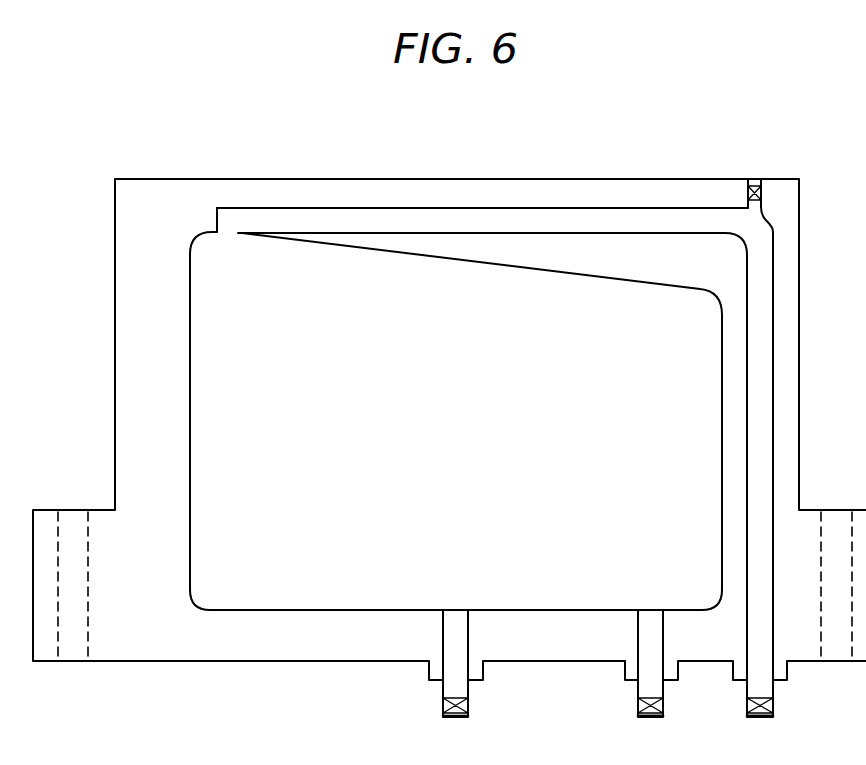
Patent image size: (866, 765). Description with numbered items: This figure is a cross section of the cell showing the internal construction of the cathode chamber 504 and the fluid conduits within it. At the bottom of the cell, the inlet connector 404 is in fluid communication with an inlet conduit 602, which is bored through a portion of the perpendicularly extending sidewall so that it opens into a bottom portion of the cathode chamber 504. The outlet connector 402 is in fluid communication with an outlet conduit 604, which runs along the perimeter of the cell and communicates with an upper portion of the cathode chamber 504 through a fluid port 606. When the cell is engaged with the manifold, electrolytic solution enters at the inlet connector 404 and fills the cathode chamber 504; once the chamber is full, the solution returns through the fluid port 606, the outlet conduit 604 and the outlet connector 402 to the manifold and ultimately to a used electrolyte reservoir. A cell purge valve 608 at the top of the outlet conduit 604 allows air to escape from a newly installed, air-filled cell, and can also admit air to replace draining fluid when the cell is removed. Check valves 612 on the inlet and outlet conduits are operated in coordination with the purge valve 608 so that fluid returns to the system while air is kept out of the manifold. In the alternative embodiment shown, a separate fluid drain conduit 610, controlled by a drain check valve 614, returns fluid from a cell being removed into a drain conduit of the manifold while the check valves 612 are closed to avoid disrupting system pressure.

The cathode chamber 504 is at (212, 418).
The inlet conduit 602 is at (638, 640).
The outlet conduit 604 is at (773, 413).
The fluid port 606 is at (236, 227).
The cell purge valve 608 is at (754, 184).
The fluid drain conduit 610 is at (443, 638).
The check valves 612 is at (663, 700).
The drain check valve 614 is at (443, 705).
The outlet connector 402 is at (773, 686).
The inlet connector 404 is at (638, 700).